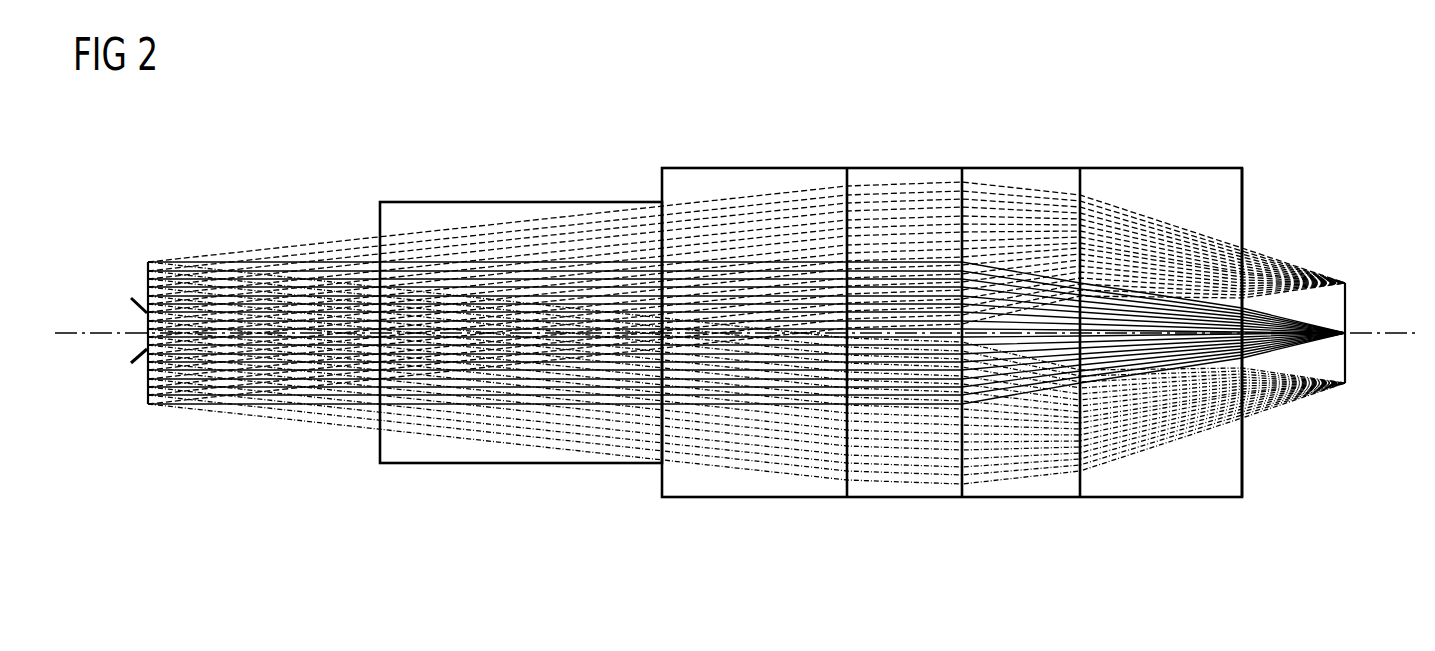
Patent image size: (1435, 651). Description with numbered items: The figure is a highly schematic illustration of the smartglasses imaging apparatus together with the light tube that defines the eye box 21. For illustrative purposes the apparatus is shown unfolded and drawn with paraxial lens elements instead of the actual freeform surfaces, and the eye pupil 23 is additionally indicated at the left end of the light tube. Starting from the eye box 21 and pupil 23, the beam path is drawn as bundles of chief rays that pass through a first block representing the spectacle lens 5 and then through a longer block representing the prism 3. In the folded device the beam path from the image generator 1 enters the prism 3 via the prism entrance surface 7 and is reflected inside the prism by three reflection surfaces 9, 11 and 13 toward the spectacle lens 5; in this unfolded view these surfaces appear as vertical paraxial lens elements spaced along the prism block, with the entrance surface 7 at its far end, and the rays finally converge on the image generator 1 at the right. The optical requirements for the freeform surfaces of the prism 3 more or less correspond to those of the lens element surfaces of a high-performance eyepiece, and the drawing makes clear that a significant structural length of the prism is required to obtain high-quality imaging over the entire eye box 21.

The image generator 1 is at (1346, 363).
The prism 3 is at (1243, 520).
The spectacle lens 5 is at (660, 520).
The prism entrance surface 7 is at (1243, 200).
The reflection surface 9 is at (1080, 170).
The reflection surface 11 is at (962, 170).
The reflection surface 13 is at (849, 170).
The eye box 21 is at (147, 284).
The eye pupil 23 is at (130, 346).